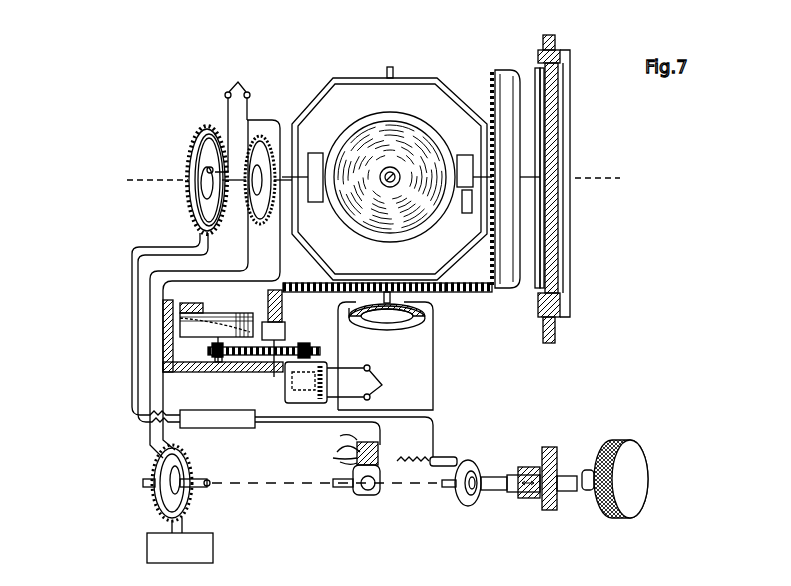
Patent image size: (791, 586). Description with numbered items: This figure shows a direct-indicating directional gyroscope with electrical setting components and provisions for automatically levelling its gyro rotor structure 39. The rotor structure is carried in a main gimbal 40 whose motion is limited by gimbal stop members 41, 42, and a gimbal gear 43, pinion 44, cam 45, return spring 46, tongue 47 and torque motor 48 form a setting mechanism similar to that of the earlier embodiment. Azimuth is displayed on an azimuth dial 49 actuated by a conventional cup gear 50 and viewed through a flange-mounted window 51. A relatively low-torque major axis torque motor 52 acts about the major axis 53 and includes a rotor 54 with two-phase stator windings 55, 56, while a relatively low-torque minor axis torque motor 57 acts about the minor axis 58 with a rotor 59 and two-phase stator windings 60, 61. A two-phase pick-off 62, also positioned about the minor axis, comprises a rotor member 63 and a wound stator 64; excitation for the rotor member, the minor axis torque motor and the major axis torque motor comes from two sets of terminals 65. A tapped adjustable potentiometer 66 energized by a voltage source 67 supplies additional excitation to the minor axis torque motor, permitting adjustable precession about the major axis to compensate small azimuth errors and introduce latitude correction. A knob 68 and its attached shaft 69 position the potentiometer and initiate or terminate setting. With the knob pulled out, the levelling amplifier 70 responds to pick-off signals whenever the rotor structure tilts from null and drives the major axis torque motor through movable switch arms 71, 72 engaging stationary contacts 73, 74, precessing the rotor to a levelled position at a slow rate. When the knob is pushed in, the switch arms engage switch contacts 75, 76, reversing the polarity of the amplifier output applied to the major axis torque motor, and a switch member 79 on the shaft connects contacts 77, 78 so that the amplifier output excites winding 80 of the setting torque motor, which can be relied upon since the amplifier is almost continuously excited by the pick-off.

The gyro rotor structure 39 is at (432, 108).
The main gimbal 40 is at (346, 78).
The gimbal stop member 41 is at (466, 213).
The gimbal stop member 42 is at (463, 155).
The gimbal gear 43 is at (448, 292).
The pinion 44 is at (283, 302).
The cam 45 is at (237, 322).
The return spring 46 is at (178, 303).
The tongue 47 is at (285, 332).
The torque motor 48 is at (285, 391).
The azimuth dial 49 is at (536, 270).
The cup gear 50 is at (502, 80).
The flange-mounted window 51 is at (556, 118).
The major axis torque motor 52 is at (412, 340).
The major axis 53 is at (390, 66).
The rotor 54 is at (415, 326).
The two-phase stator winding 55 is at (351, 308).
The two-phase stator winding 56 is at (406, 313).
The minor axis torque motor 57 is at (264, 98).
The minor axis 58 is at (377, 181).
The rotor 59 is at (249, 193).
The two-phase stator winding 60 is at (264, 134).
The two-phase stator winding 61 is at (257, 226).
The two-phase pick-off 62 is at (178, 145).
The rotor member 63 is at (210, 134).
The wound stator 64 is at (196, 198).
The terminals 65 is at (319, 229).
The tapped adjustable potentiometer 66 is at (144, 498).
The voltage source 67 is at (203, 537).
The knob 68 is at (642, 446).
The shaft 69 is at (209, 480).
The levelling amplifier 70 is at (210, 410).
The movable switch arm 71 is at (354, 468).
The movable switch arm 72 is at (379, 450).
The contact 73 is at (342, 462).
The contact 74 is at (377, 442).
The switch contact 75 is at (340, 449).
The switch contact 76 is at (333, 456).
The contact 77 is at (434, 463).
The contact 78 is at (456, 462).
The switch member 79 is at (470, 502).
The winding 80 is at (297, 396).